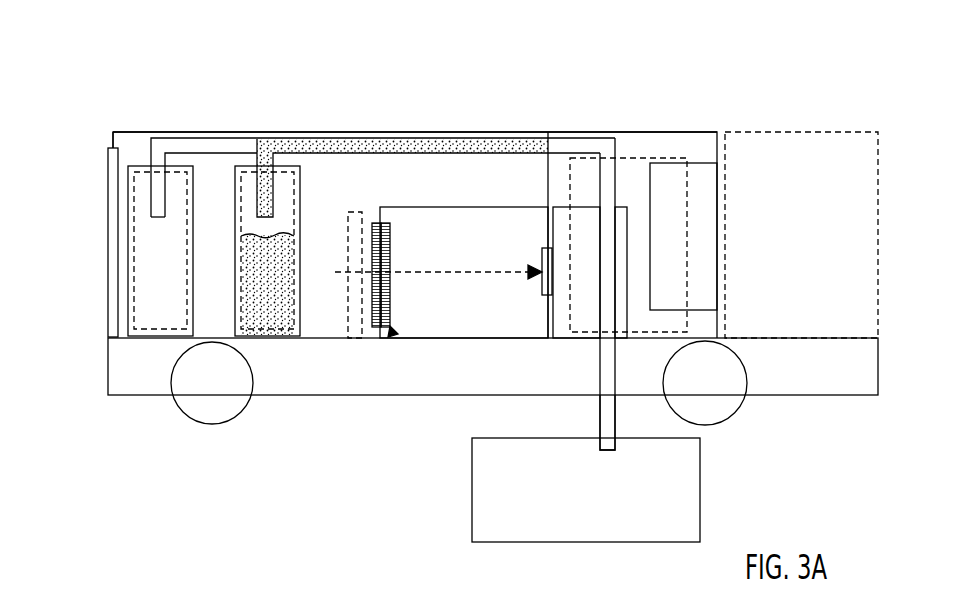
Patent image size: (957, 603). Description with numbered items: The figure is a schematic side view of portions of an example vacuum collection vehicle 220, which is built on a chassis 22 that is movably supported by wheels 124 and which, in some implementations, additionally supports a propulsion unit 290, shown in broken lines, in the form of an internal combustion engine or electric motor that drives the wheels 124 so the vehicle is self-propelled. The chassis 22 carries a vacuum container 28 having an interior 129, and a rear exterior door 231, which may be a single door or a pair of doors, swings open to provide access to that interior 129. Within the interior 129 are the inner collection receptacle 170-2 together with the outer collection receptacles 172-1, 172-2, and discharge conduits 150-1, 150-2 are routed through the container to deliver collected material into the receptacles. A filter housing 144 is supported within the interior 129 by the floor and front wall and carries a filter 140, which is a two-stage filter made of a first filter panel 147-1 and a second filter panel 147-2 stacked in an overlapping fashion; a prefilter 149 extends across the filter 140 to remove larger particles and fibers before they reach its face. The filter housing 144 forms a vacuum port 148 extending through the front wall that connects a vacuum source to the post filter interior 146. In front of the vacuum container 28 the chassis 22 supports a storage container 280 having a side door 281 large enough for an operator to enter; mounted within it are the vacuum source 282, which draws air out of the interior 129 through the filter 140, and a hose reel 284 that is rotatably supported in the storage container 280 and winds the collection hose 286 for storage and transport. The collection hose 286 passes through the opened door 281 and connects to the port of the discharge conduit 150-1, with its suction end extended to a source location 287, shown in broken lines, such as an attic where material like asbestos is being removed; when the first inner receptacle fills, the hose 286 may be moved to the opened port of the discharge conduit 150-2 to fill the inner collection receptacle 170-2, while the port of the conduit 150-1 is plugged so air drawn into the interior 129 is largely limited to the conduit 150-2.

The chassis 22 is at (108, 383).
The wheels 124 is at (225, 425).
The vacuum collection vehicle 220 is at (280, 86).
The vacuum container 28 is at (136, 132).
The rear exterior door 231 is at (108, 148).
The interior 129 is at (338, 180).
The inner collection receptacle 170-2 is at (133, 224).
The outer collection receptacle 172-2 is at (125, 290).
The outer collection receptacle 172-1 is at (238, 315).
The discharge conduit 150-2 is at (230, 145).
The discharge conduit 150-1 is at (311, 150).
The first filter panel 147-1 is at (377, 223).
The second filter panel 147-2 is at (391, 248).
The filter housing 144 is at (470, 207).
The post filter interior 146 is at (503, 247).
The filter 140 is at (390, 336).
The prefilter 149 is at (343, 330).
The vacuum port 148 is at (541, 289).
The vacuum source 282 is at (627, 313).
The side door 281 is at (637, 158).
The storage container 280 is at (647, 158).
The collection hose 286 is at (600, 416).
The hose reel 284 is at (703, 163).
The propulsion unit 290 is at (770, 132).
The source location 287 is at (632, 543).